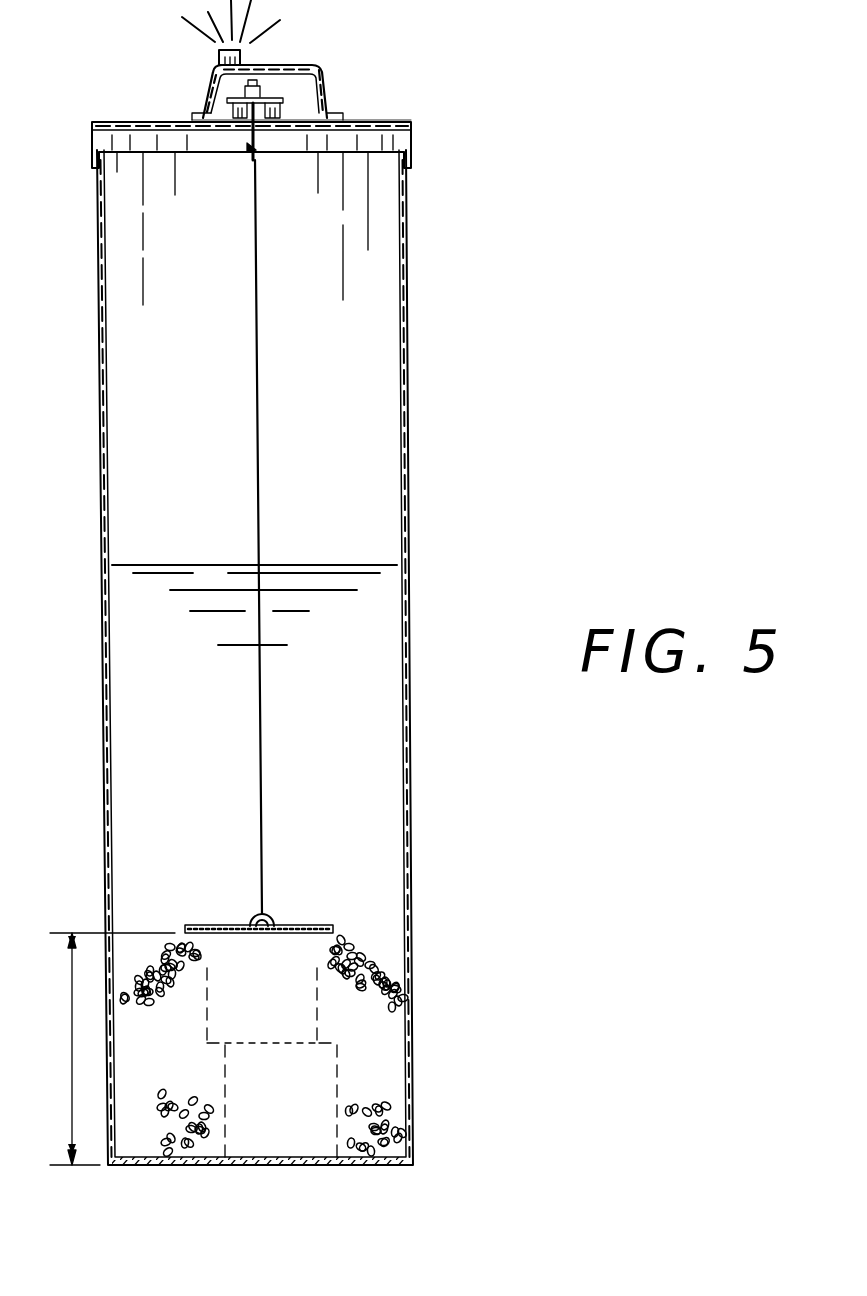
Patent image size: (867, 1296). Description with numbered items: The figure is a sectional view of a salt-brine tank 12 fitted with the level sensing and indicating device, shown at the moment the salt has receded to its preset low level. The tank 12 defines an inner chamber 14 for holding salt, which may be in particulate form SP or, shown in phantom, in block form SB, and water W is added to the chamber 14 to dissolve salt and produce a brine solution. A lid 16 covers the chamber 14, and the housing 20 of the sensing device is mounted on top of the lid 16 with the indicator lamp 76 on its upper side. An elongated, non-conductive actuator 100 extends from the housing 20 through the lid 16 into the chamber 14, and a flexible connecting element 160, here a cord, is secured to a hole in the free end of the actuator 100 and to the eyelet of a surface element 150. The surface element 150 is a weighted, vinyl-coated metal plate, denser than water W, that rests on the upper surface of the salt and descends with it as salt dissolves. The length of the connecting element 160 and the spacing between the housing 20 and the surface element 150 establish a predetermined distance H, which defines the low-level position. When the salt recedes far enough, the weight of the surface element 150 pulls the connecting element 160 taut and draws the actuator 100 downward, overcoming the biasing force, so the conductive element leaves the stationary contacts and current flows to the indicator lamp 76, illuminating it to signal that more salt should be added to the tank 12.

The salt-brine tank 12 is at (405, 445).
The inner chamber 14 is at (350, 342).
The lid 16 is at (411, 137).
The housing 20 is at (334, 84).
The indicator lamp 76 is at (218, 62).
The actuator 100 is at (247, 145).
The flexible connecting element 160 is at (257, 463).
The surface element 150 is at (303, 925).
The water W is at (326, 565).
The salt in particulate form SP is at (360, 962).
The salt in block form SB is at (317, 1060).
The predetermined distance H is at (72, 1088).